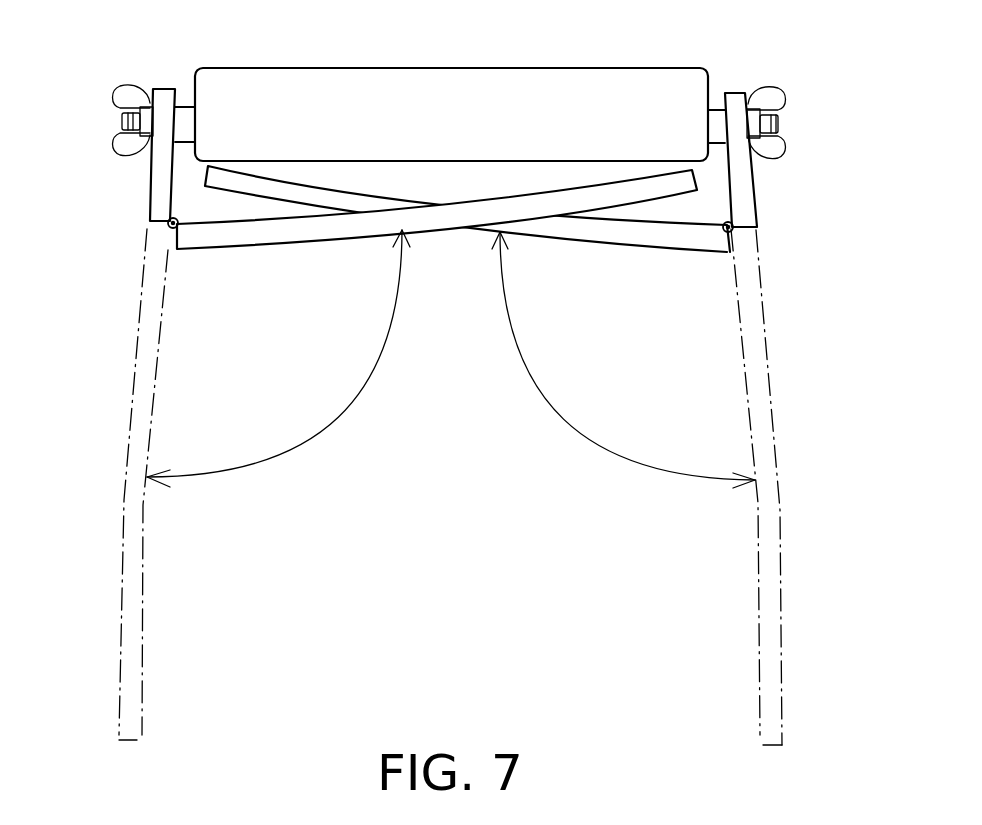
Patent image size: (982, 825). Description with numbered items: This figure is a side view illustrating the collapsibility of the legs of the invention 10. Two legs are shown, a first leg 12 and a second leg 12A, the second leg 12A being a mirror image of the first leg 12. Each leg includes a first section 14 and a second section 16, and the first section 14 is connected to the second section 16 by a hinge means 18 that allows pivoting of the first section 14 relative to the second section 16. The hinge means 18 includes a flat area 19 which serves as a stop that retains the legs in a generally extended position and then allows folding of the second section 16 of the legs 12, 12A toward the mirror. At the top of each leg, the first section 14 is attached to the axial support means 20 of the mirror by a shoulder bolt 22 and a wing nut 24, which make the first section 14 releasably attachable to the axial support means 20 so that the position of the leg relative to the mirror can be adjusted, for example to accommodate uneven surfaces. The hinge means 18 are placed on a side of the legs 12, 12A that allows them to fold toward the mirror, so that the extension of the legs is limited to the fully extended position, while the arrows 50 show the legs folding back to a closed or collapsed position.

The invention 10 is at (478, 618).
The leg 12 is at (192, 250).
The second leg 12A is at (672, 250).
The first section 14 is at (168, 92).
The second section 16 is at (310, 243).
The hinge means 18 is at (168, 228).
The flat area 19 is at (168, 223).
The axial support means 20 is at (125, 122).
The shoulder bolt 22 is at (187, 100).
The wing nut 24 is at (122, 104).
The arrows 50 is at (300, 445).